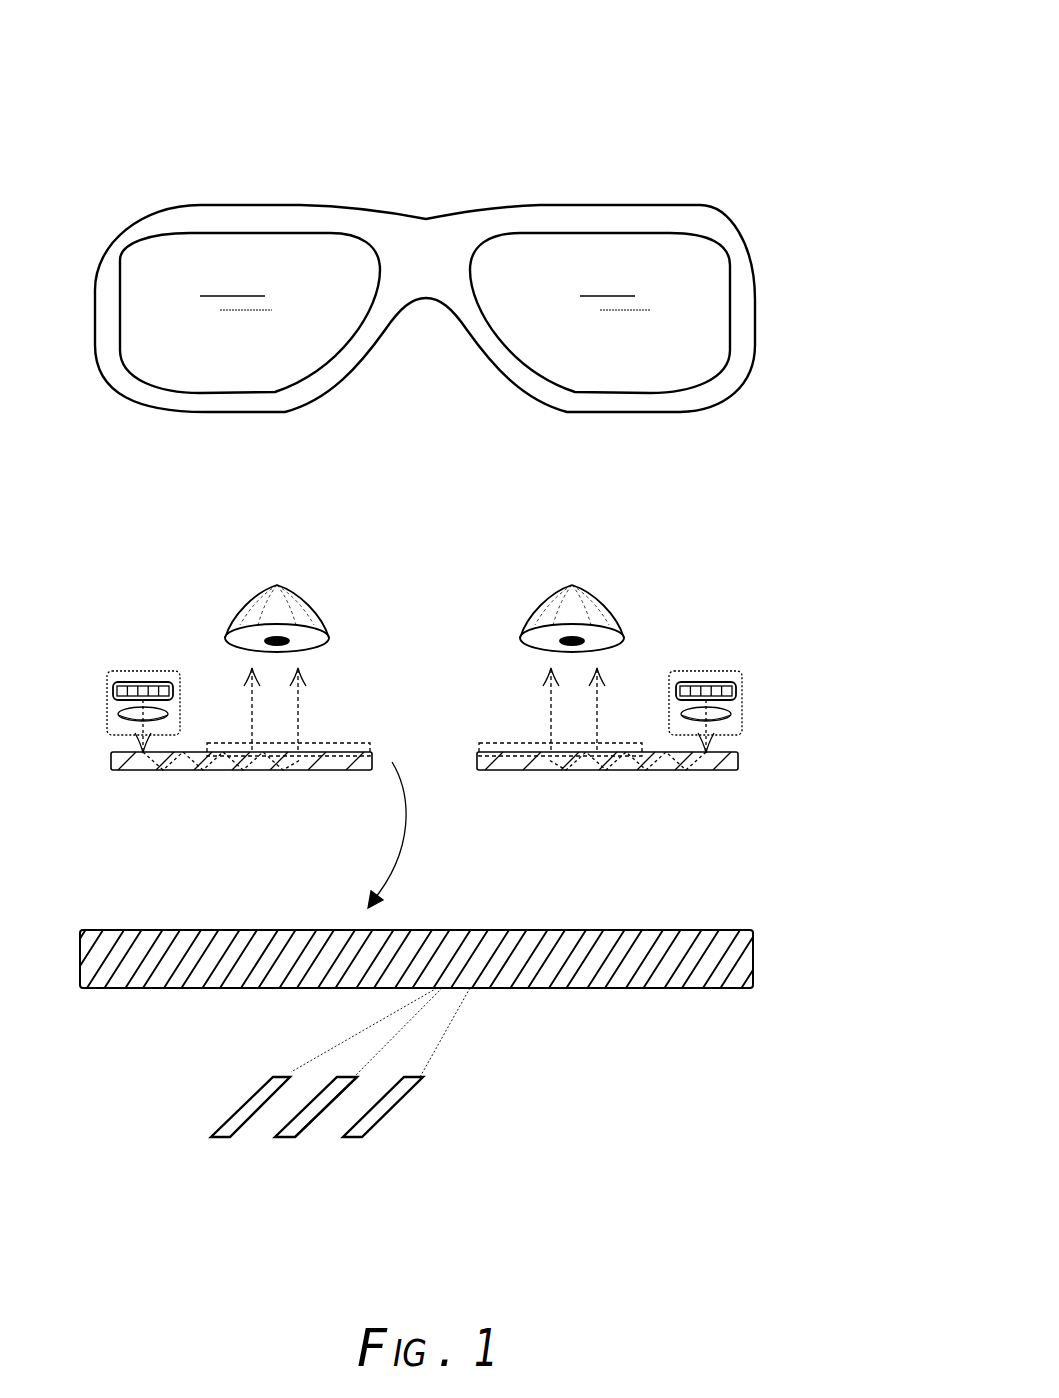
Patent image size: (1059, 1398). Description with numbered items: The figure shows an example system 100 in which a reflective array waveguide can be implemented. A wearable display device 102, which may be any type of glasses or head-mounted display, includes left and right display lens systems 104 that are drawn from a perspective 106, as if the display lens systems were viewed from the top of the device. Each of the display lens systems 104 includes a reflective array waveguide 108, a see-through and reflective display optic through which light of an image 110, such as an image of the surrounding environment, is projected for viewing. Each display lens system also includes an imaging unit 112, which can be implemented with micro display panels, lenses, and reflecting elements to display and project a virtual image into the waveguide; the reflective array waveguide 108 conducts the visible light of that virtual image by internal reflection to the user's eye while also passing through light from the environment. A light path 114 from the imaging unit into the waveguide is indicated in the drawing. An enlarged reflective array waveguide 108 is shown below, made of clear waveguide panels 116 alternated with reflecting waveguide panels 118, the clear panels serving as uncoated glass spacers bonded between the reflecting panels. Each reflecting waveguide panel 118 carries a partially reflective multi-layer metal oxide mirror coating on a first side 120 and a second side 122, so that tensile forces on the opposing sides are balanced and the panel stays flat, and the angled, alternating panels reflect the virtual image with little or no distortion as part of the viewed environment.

The system 100 is at (727, 73).
The wearable display device 102 is at (453, 176).
The display lens systems 104 is at (469, 552).
The perspective 106 is at (238, 190).
The reflective array waveguide 108 is at (232, 771).
The image 110 is at (350, 743).
The imaging unit 112 is at (131, 670).
The light beam path 114 is at (237, 745).
The clear waveguide panels 116 is at (240, 1108).
The reflecting waveguide panels 118 is at (304, 1171).
The first side 120 is at (320, 1090).
The second side 122 is at (312, 1112).